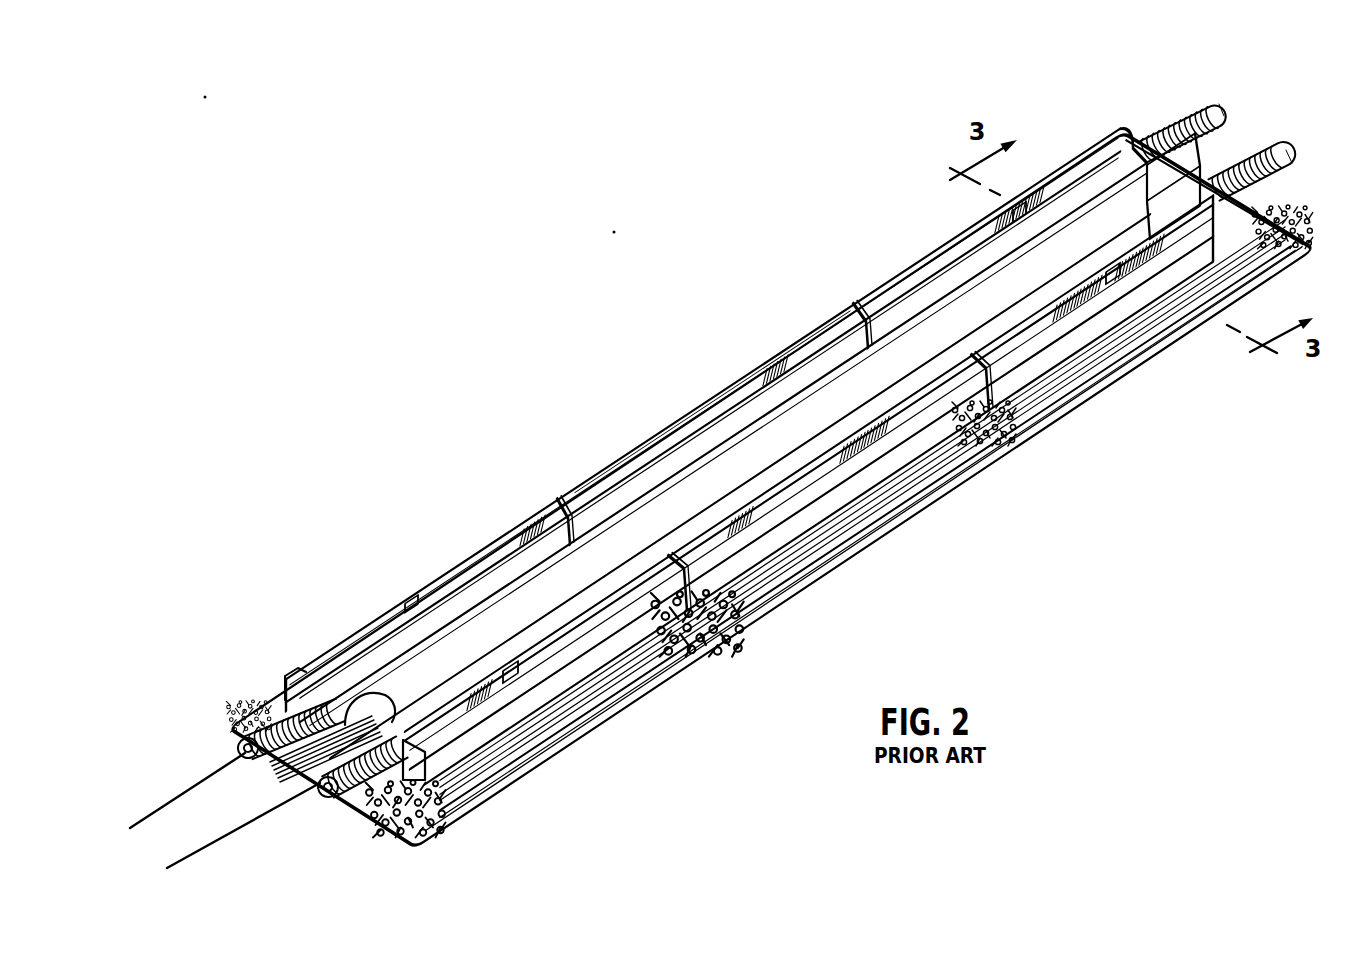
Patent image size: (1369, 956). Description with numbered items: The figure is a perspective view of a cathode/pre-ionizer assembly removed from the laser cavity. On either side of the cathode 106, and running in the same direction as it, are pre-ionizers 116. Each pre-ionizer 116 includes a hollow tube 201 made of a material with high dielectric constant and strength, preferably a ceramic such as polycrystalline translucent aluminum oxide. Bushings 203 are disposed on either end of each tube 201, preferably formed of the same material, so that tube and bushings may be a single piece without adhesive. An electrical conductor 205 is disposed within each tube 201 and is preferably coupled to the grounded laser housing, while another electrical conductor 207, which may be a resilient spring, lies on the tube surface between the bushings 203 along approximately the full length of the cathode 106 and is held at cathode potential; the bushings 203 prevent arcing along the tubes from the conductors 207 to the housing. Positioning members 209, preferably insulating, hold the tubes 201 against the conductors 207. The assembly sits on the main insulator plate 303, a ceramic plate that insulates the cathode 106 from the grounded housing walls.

The cathode 106 is at (1160, 183).
The pre-ionizer 116 is at (1212, 90).
The hollow tube 201 is at (340, 680).
The bushing 203 is at (1168, 127).
The electrical conductor 205 is at (147, 820).
The electrical conductor 207 is at (493, 598).
The positioning member 209 is at (410, 607).
The main insulator plate 303 is at (1107, 383).